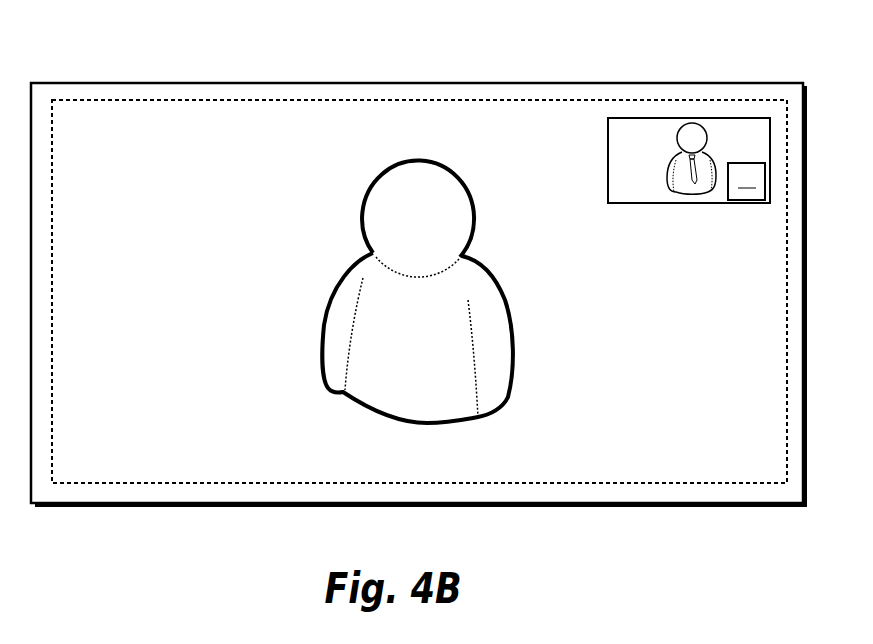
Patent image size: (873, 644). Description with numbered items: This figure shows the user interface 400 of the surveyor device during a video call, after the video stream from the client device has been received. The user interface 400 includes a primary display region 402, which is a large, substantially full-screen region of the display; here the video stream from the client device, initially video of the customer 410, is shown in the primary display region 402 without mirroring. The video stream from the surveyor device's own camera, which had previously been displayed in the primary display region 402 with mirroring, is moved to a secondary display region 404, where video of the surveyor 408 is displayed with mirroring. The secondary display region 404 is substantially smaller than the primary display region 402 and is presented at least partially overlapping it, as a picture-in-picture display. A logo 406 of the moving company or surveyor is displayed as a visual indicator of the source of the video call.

The user interface 400 is at (716, 83).
The primary display region 402 is at (149, 483).
The secondary display region 404 is at (717, 203).
The logo 406 is at (746, 181).
The surveyor 408 is at (652, 167).
The customer 410 is at (562, 378).